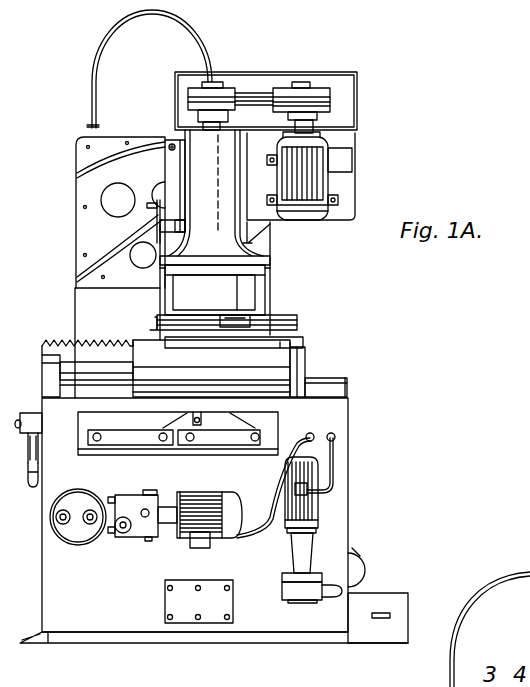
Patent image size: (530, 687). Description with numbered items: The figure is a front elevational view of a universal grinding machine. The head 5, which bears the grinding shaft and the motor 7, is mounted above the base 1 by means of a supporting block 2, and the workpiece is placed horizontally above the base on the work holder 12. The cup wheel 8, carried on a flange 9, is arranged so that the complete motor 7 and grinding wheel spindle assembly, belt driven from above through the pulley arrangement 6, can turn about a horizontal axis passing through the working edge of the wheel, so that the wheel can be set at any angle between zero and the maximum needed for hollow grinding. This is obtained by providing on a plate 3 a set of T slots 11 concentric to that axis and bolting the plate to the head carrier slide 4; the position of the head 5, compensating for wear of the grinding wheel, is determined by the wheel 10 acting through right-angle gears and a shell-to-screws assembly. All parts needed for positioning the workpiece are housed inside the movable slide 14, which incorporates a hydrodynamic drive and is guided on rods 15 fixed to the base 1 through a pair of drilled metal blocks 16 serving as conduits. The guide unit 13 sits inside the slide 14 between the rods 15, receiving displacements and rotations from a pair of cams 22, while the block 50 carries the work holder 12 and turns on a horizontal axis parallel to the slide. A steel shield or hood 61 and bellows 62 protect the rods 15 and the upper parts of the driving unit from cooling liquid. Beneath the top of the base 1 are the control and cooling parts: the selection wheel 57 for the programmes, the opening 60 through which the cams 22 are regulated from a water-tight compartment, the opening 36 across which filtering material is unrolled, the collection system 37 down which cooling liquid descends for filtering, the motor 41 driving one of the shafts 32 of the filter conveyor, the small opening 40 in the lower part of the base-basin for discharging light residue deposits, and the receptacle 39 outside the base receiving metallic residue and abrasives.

The base 1 is at (338, 425).
The supporting block 2 is at (88, 303).
The plate 3 is at (115, 143).
The head carrier slide 4 is at (170, 140).
The head 5 is at (270, 230).
The belt drive 6 is at (250, 95).
The motor 7 is at (315, 188).
The cup wheel 8 is at (242, 300).
The flange 9 is at (248, 272).
The wheel 10 is at (147, 217).
The T slots 11 is at (95, 157).
The work holder 12 is at (255, 318).
The guide unit 13 is at (230, 345).
The movable slide 14 is at (143, 353).
The rods 15 is at (70, 365).
The metal blocks 16 is at (47, 372).
The cams 22 is at (122, 433).
The shafts 32 is at (363, 570).
The opening 36 is at (67, 543).
The collection system 37 is at (318, 510).
The receptacle 39 is at (387, 600).
The small opening 40 is at (175, 598).
The motor 41 is at (140, 532).
The block 50 is at (283, 327).
The selection wheel 57 is at (28, 473).
The opening 60 is at (313, 450).
The steel shield or hood 61 is at (292, 345).
The bellows 62 is at (75, 378).